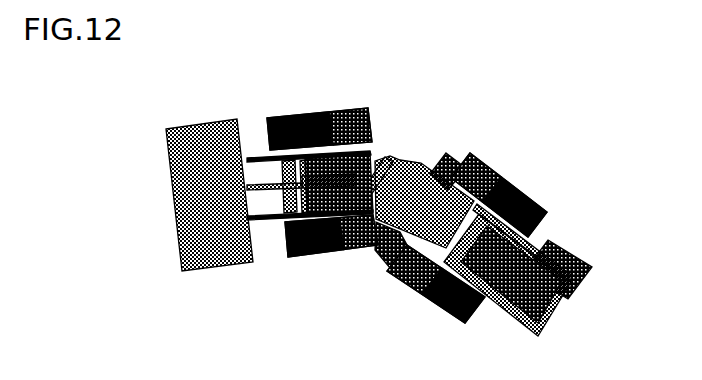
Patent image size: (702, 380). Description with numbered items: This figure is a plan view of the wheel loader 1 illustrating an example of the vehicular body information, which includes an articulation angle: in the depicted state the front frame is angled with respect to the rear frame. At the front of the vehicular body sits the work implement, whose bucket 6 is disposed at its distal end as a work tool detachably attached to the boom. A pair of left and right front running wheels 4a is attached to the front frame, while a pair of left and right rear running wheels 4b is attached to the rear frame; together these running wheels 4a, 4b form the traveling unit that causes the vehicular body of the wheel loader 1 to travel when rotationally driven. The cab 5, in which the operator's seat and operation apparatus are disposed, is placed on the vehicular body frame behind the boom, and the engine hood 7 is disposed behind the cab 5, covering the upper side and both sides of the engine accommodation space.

The wheel loader 1 is at (379, 221).
The running wheels (front wheels) 4a is at (295, 127).
The running wheels (rear wheels) 4b is at (523, 202).
The cab 5 is at (418, 187).
The bucket 6 is at (217, 260).
The engine hood 7 is at (495, 295).